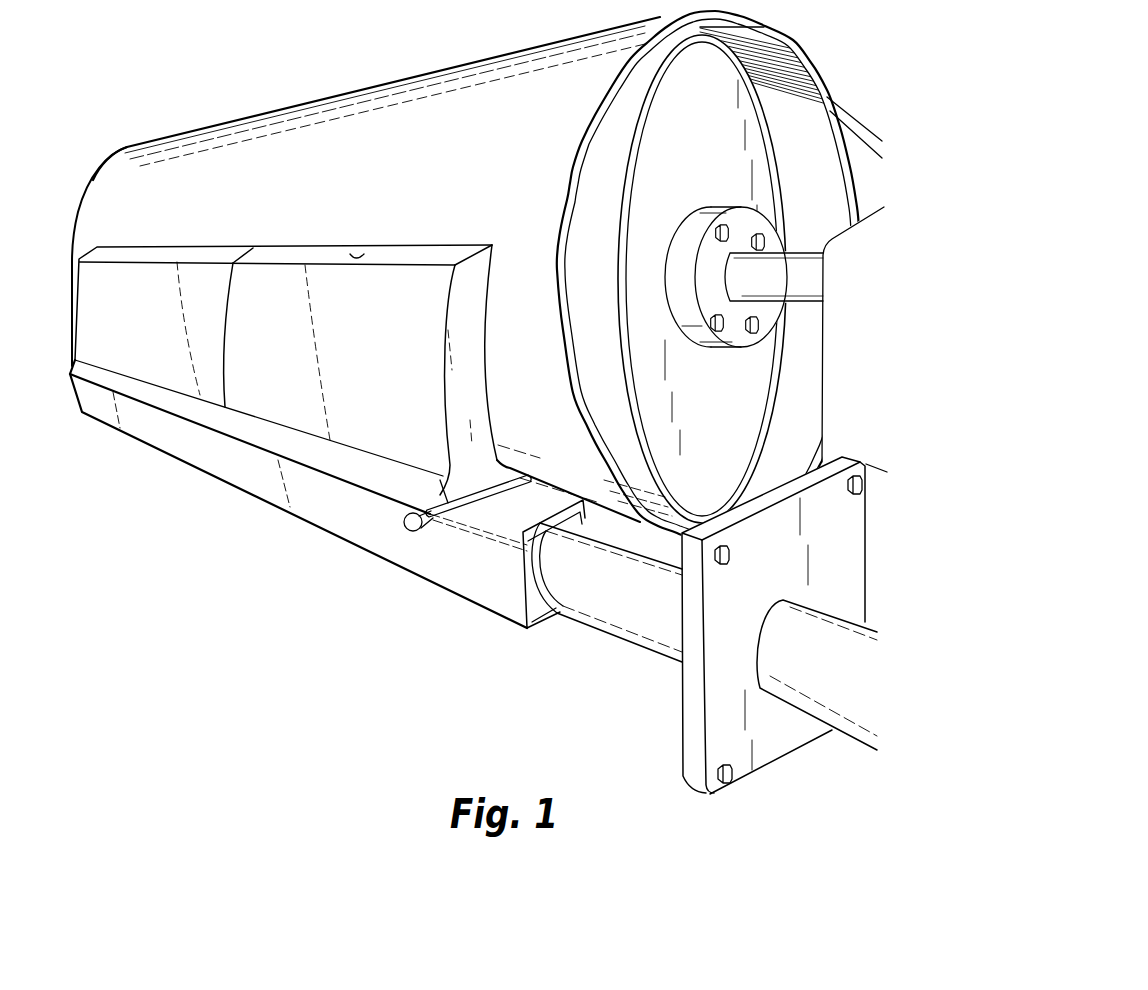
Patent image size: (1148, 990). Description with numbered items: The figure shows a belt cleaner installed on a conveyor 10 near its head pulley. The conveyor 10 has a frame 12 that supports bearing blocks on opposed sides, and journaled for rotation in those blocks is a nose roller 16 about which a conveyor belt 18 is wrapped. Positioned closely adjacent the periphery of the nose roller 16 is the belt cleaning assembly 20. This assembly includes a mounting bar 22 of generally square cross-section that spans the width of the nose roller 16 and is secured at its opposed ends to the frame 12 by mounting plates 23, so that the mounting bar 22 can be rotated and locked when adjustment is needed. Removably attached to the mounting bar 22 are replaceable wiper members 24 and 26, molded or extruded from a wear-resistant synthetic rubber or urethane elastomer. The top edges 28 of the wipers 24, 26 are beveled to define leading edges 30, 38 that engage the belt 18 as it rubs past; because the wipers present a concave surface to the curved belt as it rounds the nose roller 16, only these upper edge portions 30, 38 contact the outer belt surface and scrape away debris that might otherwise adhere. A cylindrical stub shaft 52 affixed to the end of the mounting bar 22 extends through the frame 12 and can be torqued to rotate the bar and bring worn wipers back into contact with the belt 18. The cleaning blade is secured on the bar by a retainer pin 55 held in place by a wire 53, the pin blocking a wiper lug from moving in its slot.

The conveyor 10 is at (362, 158).
The frame 12 is at (832, 425).
The nose roller 16 is at (682, 171).
The conveyor belt 18 is at (837, 98).
The belt cleaning assembly 20 is at (257, 665).
The mounting bar 22 is at (337, 523).
The mounting plate 23 is at (762, 585).
The wiper member 24 is at (327, 375).
The wiper member 26 is at (132, 343).
The top edge 28 is at (362, 250).
The leading edge 30 is at (410, 247).
The leading edge 38 is at (178, 247).
The cylindrical stub shaft 52 is at (627, 609).
The wire 53 is at (497, 505).
The retainer pin 55 is at (405, 524).